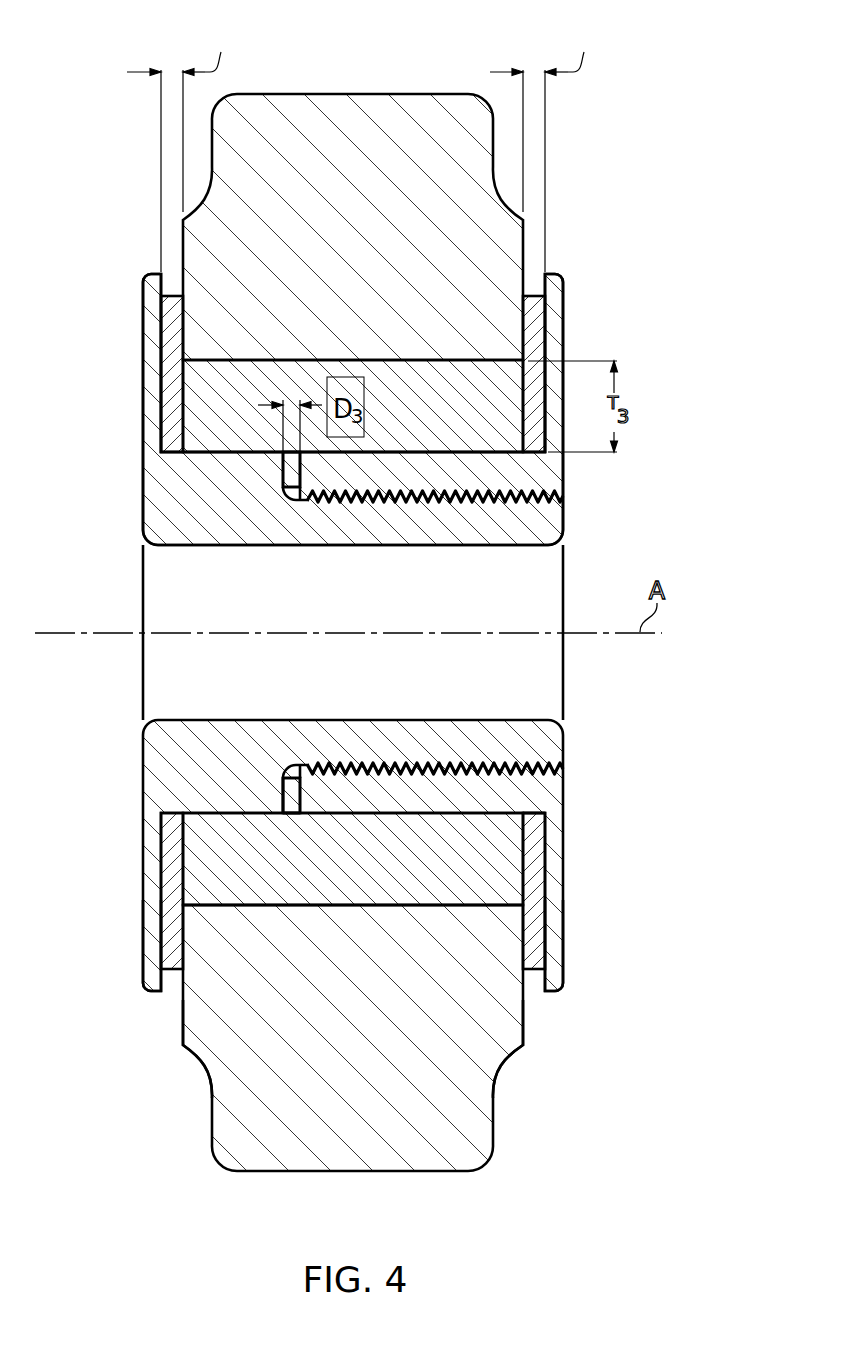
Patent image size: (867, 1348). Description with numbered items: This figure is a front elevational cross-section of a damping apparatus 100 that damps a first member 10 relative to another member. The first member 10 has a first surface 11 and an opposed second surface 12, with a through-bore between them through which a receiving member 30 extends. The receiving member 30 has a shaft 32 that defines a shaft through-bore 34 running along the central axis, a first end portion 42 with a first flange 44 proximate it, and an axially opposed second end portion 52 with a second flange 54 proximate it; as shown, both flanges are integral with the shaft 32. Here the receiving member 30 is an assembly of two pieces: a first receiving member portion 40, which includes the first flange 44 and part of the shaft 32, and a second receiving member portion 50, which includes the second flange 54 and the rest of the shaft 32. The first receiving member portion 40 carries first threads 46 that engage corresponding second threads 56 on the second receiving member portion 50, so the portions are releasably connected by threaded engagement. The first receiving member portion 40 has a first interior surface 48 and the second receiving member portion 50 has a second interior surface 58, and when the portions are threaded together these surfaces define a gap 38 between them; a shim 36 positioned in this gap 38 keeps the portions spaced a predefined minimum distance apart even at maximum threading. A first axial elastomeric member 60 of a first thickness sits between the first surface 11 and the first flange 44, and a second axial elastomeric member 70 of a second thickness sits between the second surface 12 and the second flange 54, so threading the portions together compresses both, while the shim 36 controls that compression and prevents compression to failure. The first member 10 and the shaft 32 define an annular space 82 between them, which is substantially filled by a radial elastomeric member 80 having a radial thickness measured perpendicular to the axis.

The damping apparatus 100 is at (672, 164).
The first member 10 is at (347, 1172).
The first surface 11 is at (525, 1022).
The second surface 12 is at (182, 1022).
The receiving member 30 is at (112, 740).
The shaft 32 is at (375, 527).
The shaft through-bore 34 is at (590, 673).
The shim 36 is at (285, 790).
The gap 38 is at (289, 512).
The first receiving member portion 40 is at (556, 790).
The first end portion 42 is at (578, 482).
The first flange 44 is at (555, 933).
The first threads 46 is at (480, 773).
The first interior surface 48 is at (294, 777).
The second receiving member portion 50 is at (143, 790).
The second end portion 52 is at (120, 485).
The second flange 54 is at (152, 946).
The second threads 56 is at (457, 762).
The second interior surface 58 is at (293, 810).
The first axial elastomeric member 60 is at (538, 880).
The second axial elastomeric member 70 is at (177, 880).
The radial elastomeric member 80 is at (348, 898).
The annular space 82 is at (174, 376).